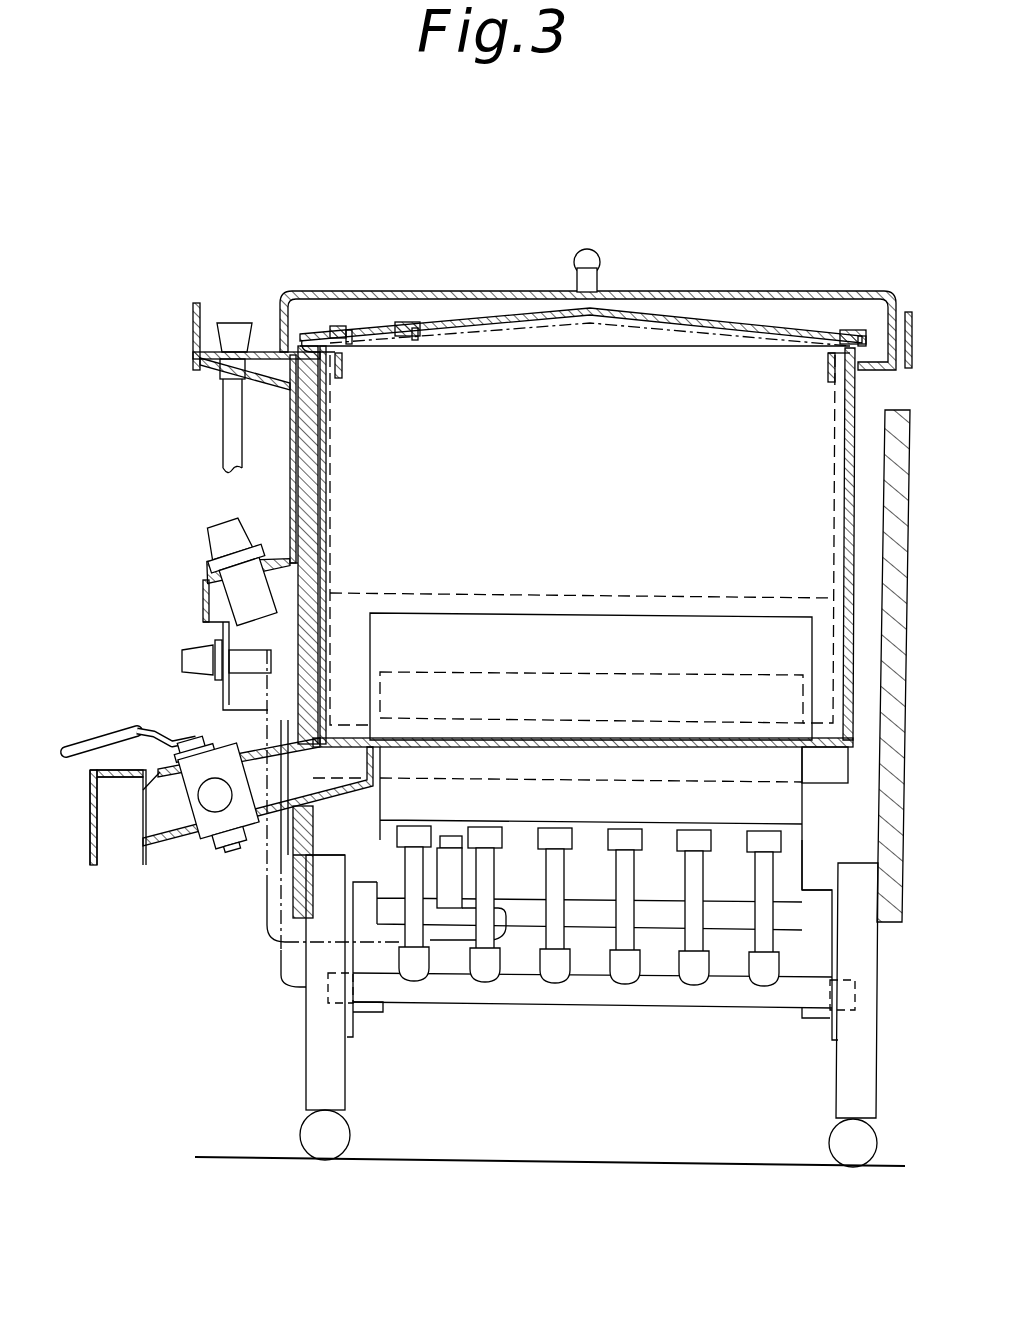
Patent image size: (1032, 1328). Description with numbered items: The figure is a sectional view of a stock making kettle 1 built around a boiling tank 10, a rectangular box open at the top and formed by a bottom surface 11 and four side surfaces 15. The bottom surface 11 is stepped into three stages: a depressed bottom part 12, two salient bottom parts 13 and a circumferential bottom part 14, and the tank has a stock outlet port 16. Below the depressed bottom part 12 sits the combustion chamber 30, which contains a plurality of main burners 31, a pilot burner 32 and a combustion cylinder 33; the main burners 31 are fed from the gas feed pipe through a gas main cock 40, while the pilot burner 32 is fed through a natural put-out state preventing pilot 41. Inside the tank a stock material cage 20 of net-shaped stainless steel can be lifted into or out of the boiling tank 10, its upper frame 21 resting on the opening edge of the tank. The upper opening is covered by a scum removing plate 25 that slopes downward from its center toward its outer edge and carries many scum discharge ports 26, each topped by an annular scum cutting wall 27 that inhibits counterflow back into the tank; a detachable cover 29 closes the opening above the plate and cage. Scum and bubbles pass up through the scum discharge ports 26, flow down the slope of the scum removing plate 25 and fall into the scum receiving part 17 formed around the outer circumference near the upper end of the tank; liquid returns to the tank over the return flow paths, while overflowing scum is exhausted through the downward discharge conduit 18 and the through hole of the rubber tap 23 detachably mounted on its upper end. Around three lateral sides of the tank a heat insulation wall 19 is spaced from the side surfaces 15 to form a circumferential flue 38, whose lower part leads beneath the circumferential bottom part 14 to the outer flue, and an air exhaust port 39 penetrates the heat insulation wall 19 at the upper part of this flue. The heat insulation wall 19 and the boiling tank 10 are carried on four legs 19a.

The stock making kettle 1 is at (755, 224).
The boiling tank 10 is at (862, 472).
The bottom surface 11 is at (841, 792).
The depressed bottom part 12 is at (598, 690).
The salient bottom part 13 is at (562, 612).
The circumferential bottom part 14 is at (813, 787).
The side surface 15 is at (328, 532).
The stock outlet port 16 is at (143, 846).
The scum receiving part 17 is at (236, 320).
The discharge conduit 18 is at (222, 437).
The heat insulation wall 19 is at (880, 690).
The leg 19a is at (300, 1070).
The stock material cage 20 is at (332, 462).
The frame 21 is at (342, 362).
The rubber tap 23 is at (196, 312).
The scum removing plate 25 is at (690, 318).
The scum discharge port 26 is at (332, 330).
The scum cutting wall 27 is at (342, 336).
The cover 29 is at (603, 288).
The combustion chamber 30 is at (672, 797).
The main burner 31 is at (410, 838).
The pilot burner 32 is at (452, 840).
The combustion cylinder 33 is at (802, 870).
The circumferential flue 38 is at (855, 606).
The air exhaust port 39 is at (908, 330).
The gas main cock 40 is at (182, 660).
The natural put-out state preventing pilot 41 is at (224, 530).